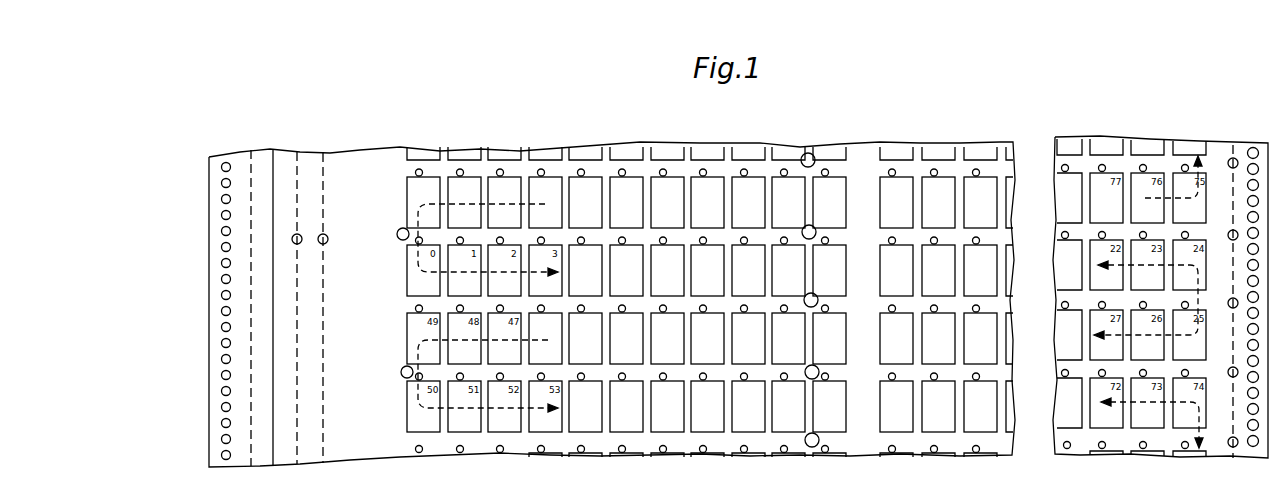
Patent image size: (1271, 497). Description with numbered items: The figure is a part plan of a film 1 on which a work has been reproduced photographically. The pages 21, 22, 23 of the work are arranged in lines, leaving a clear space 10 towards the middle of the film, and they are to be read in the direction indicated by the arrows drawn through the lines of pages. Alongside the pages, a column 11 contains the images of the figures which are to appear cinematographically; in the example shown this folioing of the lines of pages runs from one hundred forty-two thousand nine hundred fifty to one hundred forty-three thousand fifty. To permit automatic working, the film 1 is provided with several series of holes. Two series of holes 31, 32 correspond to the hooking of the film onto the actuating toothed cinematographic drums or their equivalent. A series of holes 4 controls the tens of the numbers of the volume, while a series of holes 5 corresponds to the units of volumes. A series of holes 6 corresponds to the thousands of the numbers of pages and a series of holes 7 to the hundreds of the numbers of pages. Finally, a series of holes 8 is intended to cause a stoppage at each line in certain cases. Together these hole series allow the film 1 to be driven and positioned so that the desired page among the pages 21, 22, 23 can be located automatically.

The film 1 is at (633, 210).
The page 21 is at (419, 191).
The page 22 is at (459, 191).
The page 23 is at (508, 198).
The series of holes 31 is at (221, 168).
The series of holes 32 is at (1250, 201).
The series of holes 4 is at (251, 192).
The series of holes 5 is at (273, 222).
The series of holes 6 is at (293, 243).
The series of holes 7 is at (320, 243).
The series of holes 8 is at (1231, 158).
The clear space 10 is at (850, 181).
The column 11 is at (357, 155).